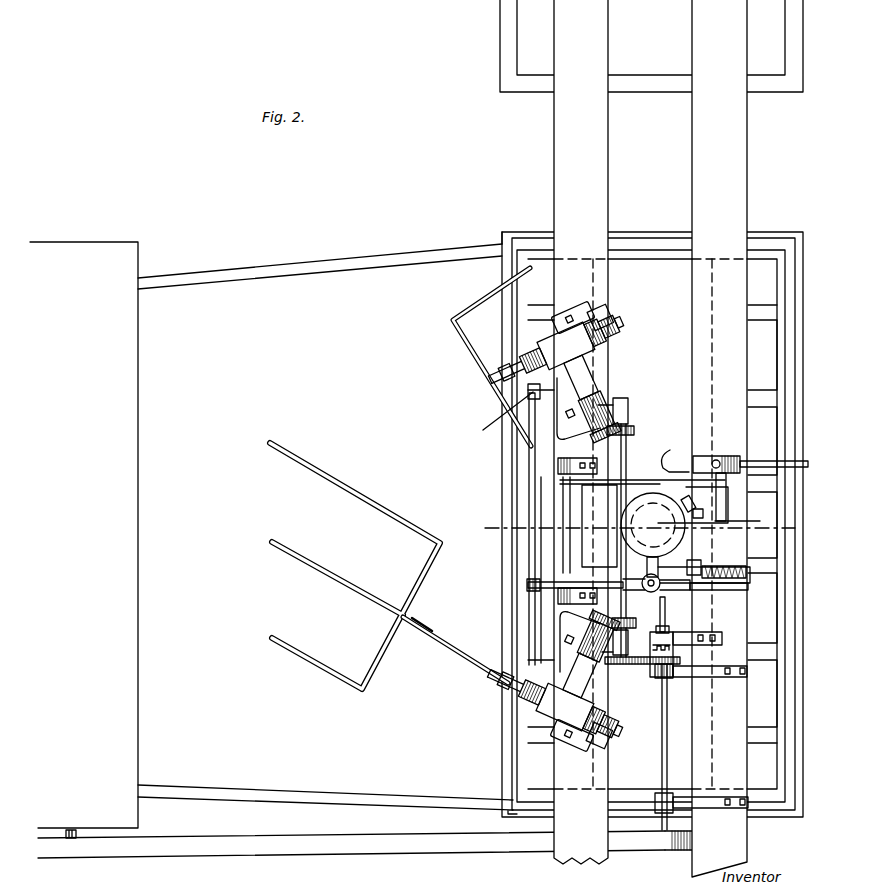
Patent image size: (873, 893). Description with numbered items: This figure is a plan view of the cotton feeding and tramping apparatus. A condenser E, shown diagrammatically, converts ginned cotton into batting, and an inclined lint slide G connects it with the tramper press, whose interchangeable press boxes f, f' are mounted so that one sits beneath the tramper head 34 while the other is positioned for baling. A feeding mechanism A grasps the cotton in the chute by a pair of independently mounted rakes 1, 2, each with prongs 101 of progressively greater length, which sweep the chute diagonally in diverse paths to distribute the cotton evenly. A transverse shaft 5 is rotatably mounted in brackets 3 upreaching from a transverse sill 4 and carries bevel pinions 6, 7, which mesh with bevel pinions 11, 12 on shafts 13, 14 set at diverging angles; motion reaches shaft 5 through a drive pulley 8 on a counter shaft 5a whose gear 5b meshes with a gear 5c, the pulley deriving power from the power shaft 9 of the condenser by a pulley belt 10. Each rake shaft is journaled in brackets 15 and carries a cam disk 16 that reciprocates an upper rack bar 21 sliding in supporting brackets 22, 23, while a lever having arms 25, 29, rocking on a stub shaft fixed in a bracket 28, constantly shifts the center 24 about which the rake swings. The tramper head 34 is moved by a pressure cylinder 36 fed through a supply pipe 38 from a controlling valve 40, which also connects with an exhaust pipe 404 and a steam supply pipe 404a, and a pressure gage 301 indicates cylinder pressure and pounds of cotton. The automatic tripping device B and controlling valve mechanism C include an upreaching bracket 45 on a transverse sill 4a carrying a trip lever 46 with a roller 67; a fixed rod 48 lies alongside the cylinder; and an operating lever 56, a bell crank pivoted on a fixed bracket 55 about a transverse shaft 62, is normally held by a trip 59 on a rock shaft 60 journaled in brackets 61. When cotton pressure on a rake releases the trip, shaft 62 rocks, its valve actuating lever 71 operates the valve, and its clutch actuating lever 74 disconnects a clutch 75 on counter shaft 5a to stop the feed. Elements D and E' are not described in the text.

The rake 1 is at (355, 566).
The rake 2 is at (451, 361).
The brackets 3 is at (628, 412).
The transverse sill 4 is at (598, 210).
The transverse sill 4a is at (736, 194).
The transverse shaft 5 is at (627, 475).
The counter shaft 5a is at (668, 722).
The gear 5b is at (642, 669).
The gear 5c is at (650, 697).
The bevel pinion 6 is at (632, 622).
The bevel pinion 7 is at (634, 432).
The drive pulley 8 is at (648, 850).
The power shaft 9 is at (78, 830).
The pulley belt 10 is at (383, 852).
The bevel pinion 11 is at (590, 622).
The bevel pinion 12 is at (598, 440).
The shaft 13 is at (560, 676).
The shaft 14 is at (542, 396).
The brackets 15 is at (598, 400).
The cam disk 16 is at (604, 346).
The upper rack bar 21 is at (535, 358).
The supporting bracket 22 is at (508, 368).
The supporting bracket 23 is at (565, 322).
The center 24 is at (600, 325).
The arm 25 is at (615, 335).
The bracket 28 is at (600, 316).
The arm 29 is at (606, 364).
The tramper head 34 is at (758, 690).
The pressure cylinder 36 is at (653, 535).
The fluid pressure supply pipe 38 is at (742, 504).
The controlling valve 40 is at (716, 456).
The bracket 45 is at (705, 566).
The trip lever 46 is at (712, 580).
The fixed rod 48 is at (660, 592).
The fixed bracket 55 is at (575, 474).
The operating lever 56 is at (596, 582).
The trip 59 is at (527, 588).
The rock shaft 60 is at (528, 535).
The brackets 61 is at (522, 668).
The transverse shaft 62 is at (540, 535).
The roller 67 is at (702, 592).
The valve actuating lever 71 is at (563, 484).
The clutch actuating lever 74 is at (672, 610).
The clutch 75 is at (674, 650).
The prongs 101 is at (478, 306).
The pressure gage 301 is at (705, 515).
The exhaust pipe 404 is at (676, 451).
The steam supply pipe 404a is at (755, 462).
The feeding mechanism A is at (625, 525).
The automatic tripping device B is at (704, 535).
The controlling valve mechanism C is at (685, 459).
The pin D is at (693, 499).
The condenser E is at (84, 535).
The frame E' is at (514, 226).
The lint slide G is at (327, 529).
The press box f is at (652, 512).
The press box f' is at (650, 60).